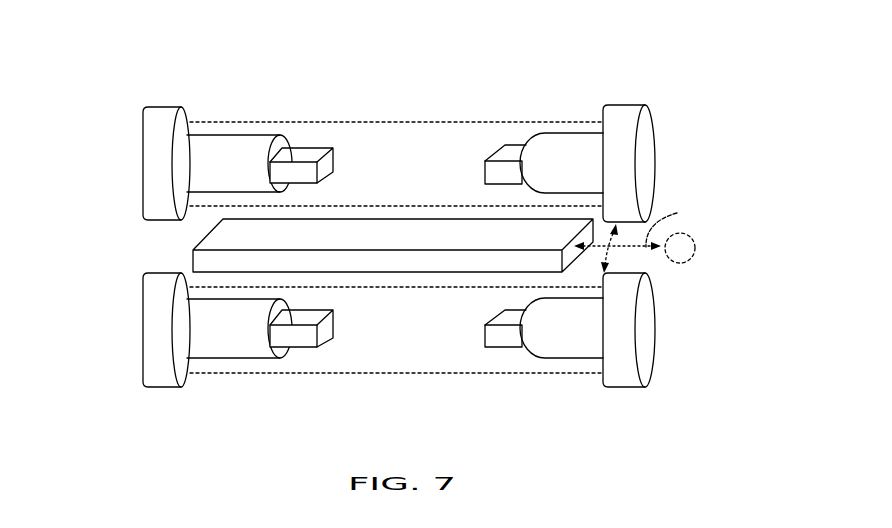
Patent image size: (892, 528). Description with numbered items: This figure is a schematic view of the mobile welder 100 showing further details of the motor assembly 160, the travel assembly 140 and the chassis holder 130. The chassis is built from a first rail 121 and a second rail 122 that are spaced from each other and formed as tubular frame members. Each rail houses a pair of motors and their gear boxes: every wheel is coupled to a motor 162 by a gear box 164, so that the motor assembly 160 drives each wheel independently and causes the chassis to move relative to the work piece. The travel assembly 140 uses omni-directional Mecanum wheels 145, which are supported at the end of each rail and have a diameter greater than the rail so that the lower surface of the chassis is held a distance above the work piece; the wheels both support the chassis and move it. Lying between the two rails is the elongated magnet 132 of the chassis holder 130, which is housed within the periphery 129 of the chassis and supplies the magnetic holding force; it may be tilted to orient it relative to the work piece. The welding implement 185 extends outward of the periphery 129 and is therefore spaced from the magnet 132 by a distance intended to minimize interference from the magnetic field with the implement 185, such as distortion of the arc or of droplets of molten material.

The mobile welder 100 is at (210, 79).
The travel assembly 140 is at (128, 136).
The Mecanum wheel 145 is at (152, 182).
The gear box 164 is at (230, 153).
The motor 162 is at (303, 152).
The periphery 129 is at (393, 117).
The first rail 121 is at (460, 137).
The second rail 122 is at (437, 345).
The magnet 132 is at (195, 262).
The chassis holder 130 is at (385, 263).
The motor assembly 160 is at (218, 337).
The implement 185 is at (698, 243).